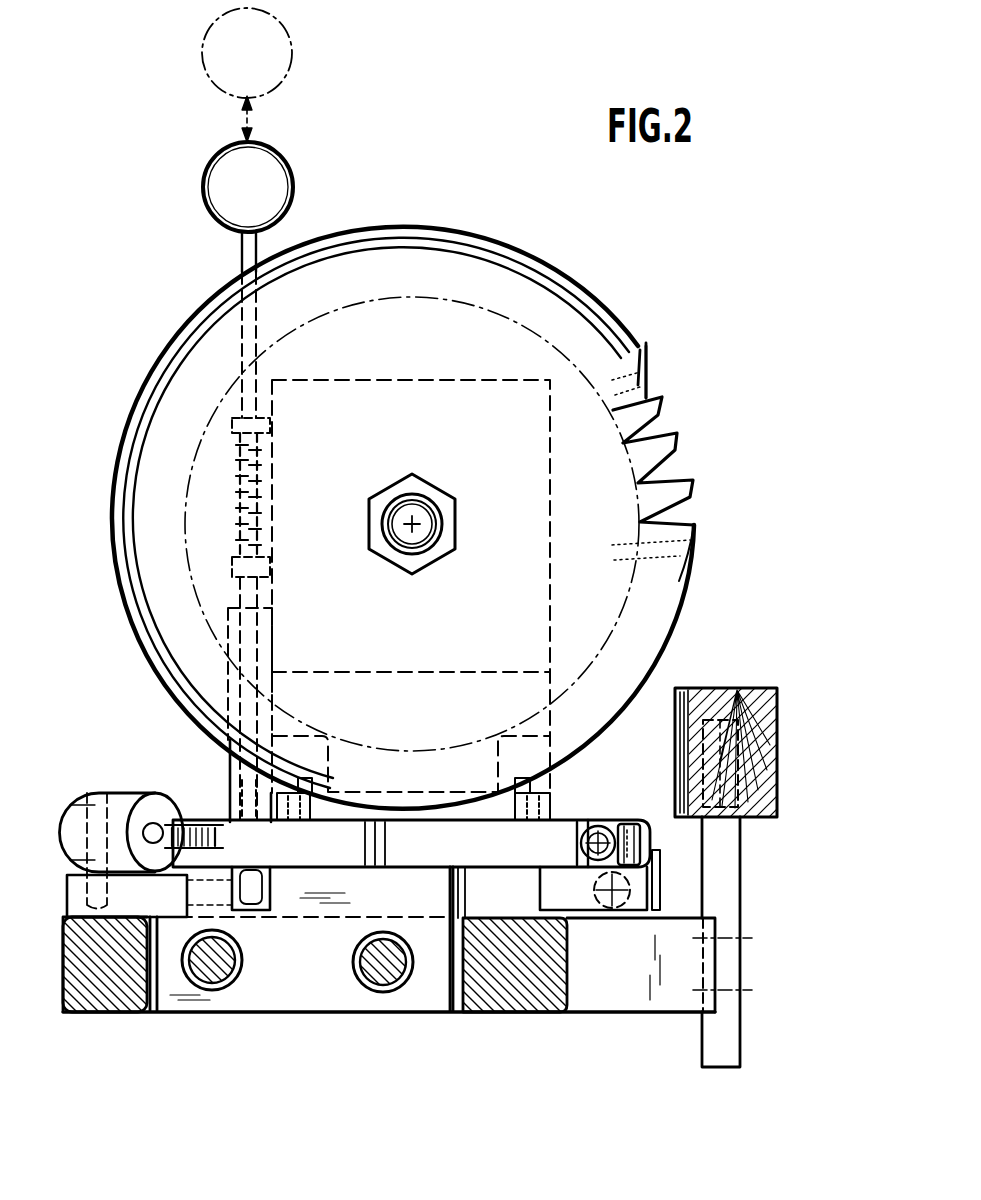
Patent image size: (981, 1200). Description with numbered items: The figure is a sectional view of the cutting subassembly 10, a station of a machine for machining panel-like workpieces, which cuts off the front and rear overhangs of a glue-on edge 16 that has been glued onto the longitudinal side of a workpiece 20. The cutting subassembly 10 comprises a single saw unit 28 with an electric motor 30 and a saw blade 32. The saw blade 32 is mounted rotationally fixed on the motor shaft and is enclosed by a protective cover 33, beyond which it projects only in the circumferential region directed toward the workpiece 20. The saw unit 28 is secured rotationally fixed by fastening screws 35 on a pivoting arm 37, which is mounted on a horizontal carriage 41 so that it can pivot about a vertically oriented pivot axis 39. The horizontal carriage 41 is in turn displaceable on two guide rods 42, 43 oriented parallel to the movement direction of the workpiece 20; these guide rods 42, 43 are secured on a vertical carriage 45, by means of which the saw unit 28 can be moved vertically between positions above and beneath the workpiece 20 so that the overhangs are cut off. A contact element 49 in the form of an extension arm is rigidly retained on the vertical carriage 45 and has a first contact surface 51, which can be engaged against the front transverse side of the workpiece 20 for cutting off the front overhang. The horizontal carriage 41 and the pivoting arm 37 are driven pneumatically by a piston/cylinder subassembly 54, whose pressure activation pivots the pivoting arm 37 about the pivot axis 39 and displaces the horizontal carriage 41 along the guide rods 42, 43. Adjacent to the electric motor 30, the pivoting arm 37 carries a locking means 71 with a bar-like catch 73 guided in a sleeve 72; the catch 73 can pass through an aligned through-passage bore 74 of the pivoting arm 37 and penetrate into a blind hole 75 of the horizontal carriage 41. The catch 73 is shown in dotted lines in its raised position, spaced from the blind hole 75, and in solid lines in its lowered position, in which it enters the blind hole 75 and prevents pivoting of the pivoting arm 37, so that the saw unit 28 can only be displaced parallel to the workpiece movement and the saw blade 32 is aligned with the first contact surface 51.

The cutting subassembly 10 is at (388, 205).
The saw unit 28 is at (447, 222).
The protective cover 33 is at (650, 327).
The saw blade 32 is at (680, 442).
The electric motor 30 is at (432, 372).
The fastening screws 35 is at (312, 836).
The locking means 71 is at (218, 703).
The sleeve 72 is at (248, 676).
The bar-like catch 73 is at (240, 776).
The through-passage bore 74 is at (246, 812).
The piston/cylinder subassembly 54 is at (121, 782).
The pivoting arm 37 is at (493, 880).
The pivot axis 39 is at (621, 822).
The blind hole 75 is at (256, 906).
The horizontal carriage 41 is at (318, 1018).
The guide rod 43 is at (213, 968).
The guide rod 42 is at (385, 968).
The vertical carriage 45 is at (586, 1026).
The contact element 49 is at (758, 858).
The glue-on edge 16 is at (676, 736).
The first contact surface 51 is at (739, 690).
The workpiece 20 is at (762, 716).